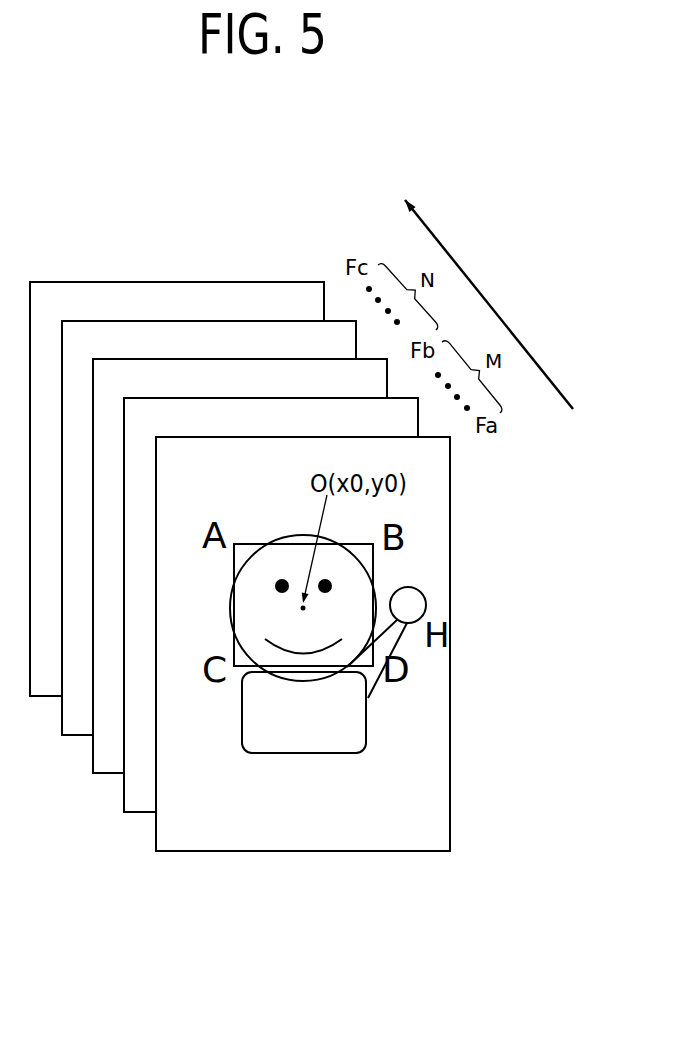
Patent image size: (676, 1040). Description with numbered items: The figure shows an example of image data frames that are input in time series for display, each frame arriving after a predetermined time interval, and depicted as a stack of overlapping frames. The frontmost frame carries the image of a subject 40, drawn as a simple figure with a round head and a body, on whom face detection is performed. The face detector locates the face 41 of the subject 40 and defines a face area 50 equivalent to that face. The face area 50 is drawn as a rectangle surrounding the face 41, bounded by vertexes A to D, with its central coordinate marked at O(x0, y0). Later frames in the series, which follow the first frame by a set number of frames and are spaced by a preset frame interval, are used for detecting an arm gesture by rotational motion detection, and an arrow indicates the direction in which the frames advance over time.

The subject 40 is at (262, 723).
The face 41 is at (258, 613).
The face area 50 is at (244, 543).